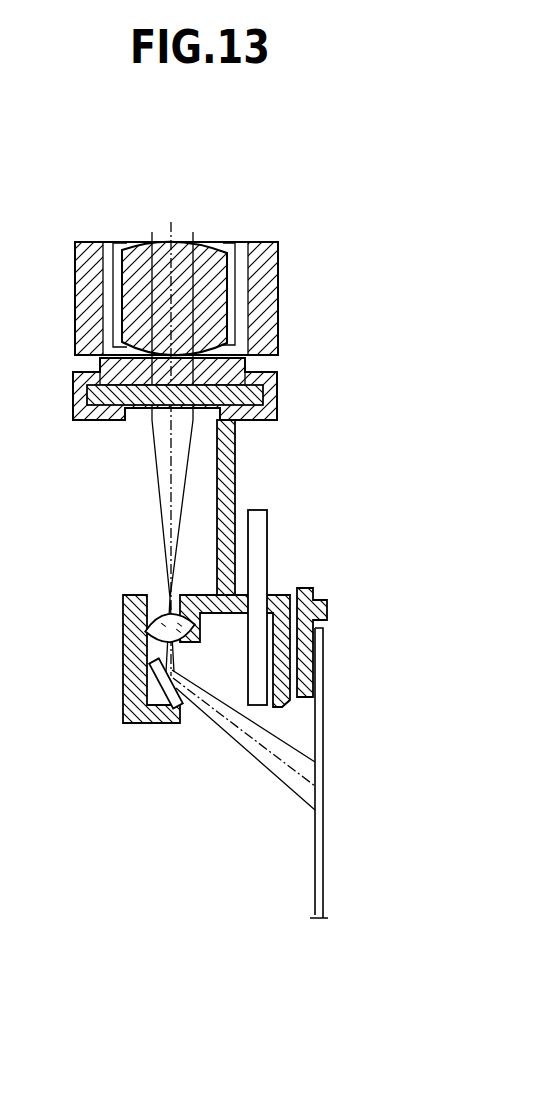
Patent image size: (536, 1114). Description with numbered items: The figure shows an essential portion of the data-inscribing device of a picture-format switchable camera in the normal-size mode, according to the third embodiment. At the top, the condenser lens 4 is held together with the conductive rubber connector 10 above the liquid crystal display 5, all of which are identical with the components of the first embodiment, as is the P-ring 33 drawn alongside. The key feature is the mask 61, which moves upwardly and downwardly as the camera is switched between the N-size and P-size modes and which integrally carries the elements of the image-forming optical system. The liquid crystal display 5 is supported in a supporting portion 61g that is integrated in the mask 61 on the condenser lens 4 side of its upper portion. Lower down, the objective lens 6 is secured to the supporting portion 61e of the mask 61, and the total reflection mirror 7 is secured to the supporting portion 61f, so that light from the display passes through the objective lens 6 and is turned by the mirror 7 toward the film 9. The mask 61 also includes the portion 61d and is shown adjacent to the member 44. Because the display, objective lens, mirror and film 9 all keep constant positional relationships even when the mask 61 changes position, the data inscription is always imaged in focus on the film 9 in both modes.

The condenser lens 4 is at (207, 272).
The conductive rubber connector 10 is at (260, 308).
The liquid crystal display 5 is at (242, 400).
The supporting portion 61g is at (257, 423).
The objective lens 6 is at (162, 584).
The mask 61 is at (262, 592).
The P-ring 33 is at (272, 524).
The guide member 44 is at (317, 593).
The supporting portion 61e is at (142, 622).
The supporting portion 61f is at (135, 698).
The total reflection mirror 7 is at (161, 718).
The engaging portion 61d is at (290, 718).
The film 9 is at (325, 845).